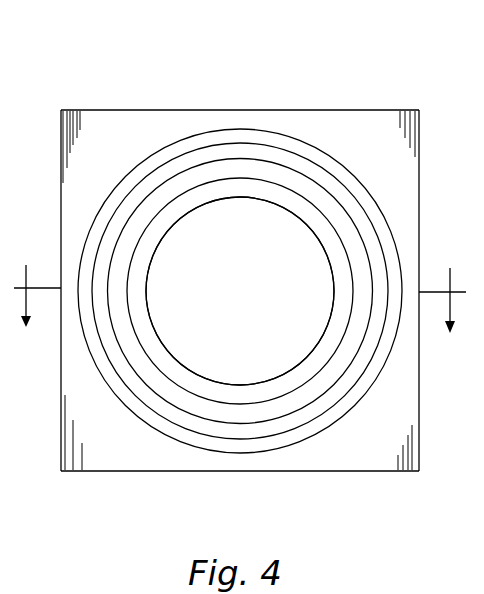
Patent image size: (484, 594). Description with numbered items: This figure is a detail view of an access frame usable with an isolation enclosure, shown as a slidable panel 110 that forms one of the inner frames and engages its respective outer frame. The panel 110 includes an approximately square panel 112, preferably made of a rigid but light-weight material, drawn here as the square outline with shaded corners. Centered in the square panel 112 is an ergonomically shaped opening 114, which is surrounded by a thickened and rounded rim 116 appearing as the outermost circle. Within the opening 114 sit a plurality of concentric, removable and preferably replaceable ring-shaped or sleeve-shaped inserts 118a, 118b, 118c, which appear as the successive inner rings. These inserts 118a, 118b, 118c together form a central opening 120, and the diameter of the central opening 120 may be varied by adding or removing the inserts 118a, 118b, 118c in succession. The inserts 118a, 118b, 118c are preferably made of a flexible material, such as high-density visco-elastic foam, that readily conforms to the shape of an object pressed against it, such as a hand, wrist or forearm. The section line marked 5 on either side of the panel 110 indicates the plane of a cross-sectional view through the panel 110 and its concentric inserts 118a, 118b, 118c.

The slidable panel 110 is at (101, 92).
The square panel 112 is at (250, 111).
The opening 114 is at (308, 157).
The rim 116 is at (368, 192).
The insert 118a is at (137, 402).
The insert 118b is at (228, 425).
The insert 118c is at (323, 372).
The central opening 120 is at (255, 298).
The section line 5- 5 is at (240, 283).